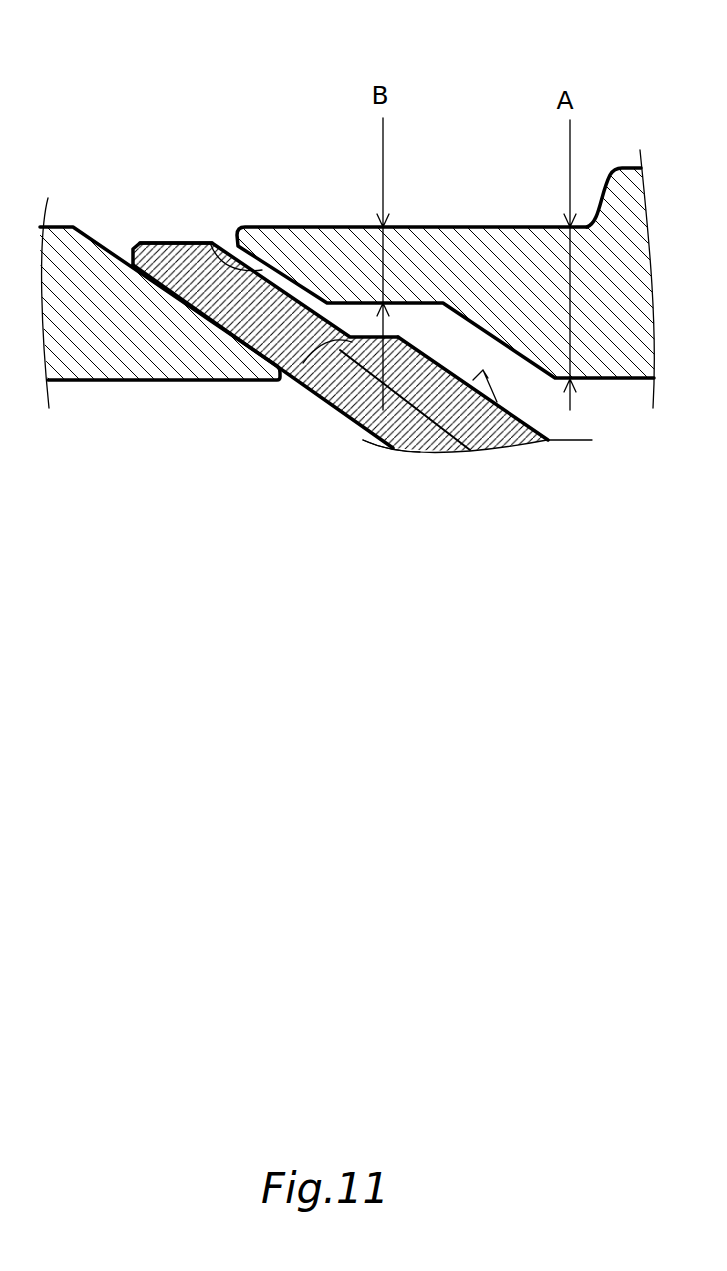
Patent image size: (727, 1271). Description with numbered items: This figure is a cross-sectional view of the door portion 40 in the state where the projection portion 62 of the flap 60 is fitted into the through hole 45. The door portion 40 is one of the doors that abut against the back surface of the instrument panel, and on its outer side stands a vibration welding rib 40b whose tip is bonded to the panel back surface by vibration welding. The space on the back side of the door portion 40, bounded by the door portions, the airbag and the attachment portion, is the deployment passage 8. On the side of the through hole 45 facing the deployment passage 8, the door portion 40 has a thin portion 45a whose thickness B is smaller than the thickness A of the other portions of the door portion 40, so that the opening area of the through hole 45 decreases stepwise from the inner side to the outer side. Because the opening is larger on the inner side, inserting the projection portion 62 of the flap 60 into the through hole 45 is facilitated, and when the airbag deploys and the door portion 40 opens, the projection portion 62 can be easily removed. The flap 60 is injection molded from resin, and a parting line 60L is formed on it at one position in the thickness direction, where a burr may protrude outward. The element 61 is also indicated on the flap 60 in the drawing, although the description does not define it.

The deployment passage 8 is at (233, 549).
The door portion 40 is at (60, 226).
The vibration welding rib 40b is at (615, 192).
The through hole 45 is at (204, 240).
The thin portion 45a is at (513, 443).
The flap 60 is at (443, 447).
The parting line 60L is at (407, 450).
The pin 61 is at (280, 370).
The projection portion 62 is at (157, 240).